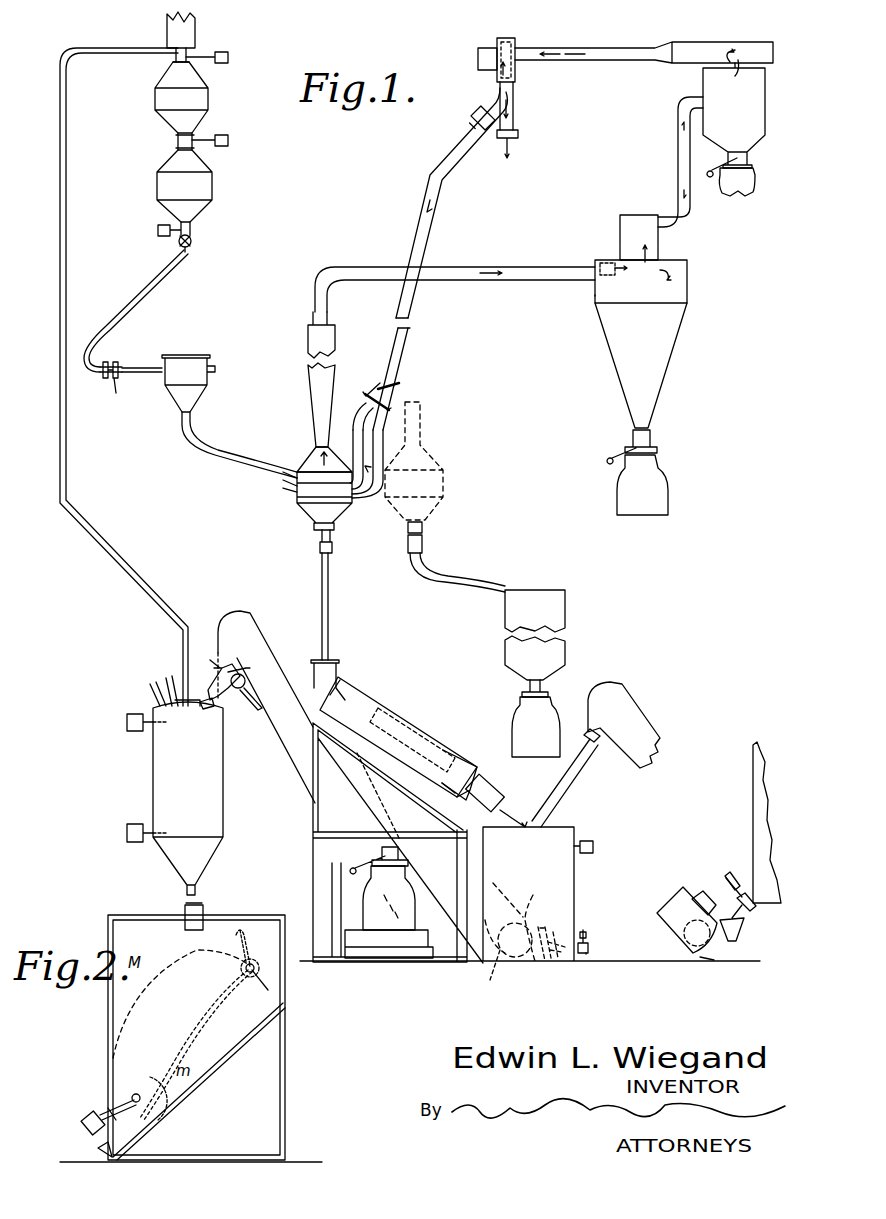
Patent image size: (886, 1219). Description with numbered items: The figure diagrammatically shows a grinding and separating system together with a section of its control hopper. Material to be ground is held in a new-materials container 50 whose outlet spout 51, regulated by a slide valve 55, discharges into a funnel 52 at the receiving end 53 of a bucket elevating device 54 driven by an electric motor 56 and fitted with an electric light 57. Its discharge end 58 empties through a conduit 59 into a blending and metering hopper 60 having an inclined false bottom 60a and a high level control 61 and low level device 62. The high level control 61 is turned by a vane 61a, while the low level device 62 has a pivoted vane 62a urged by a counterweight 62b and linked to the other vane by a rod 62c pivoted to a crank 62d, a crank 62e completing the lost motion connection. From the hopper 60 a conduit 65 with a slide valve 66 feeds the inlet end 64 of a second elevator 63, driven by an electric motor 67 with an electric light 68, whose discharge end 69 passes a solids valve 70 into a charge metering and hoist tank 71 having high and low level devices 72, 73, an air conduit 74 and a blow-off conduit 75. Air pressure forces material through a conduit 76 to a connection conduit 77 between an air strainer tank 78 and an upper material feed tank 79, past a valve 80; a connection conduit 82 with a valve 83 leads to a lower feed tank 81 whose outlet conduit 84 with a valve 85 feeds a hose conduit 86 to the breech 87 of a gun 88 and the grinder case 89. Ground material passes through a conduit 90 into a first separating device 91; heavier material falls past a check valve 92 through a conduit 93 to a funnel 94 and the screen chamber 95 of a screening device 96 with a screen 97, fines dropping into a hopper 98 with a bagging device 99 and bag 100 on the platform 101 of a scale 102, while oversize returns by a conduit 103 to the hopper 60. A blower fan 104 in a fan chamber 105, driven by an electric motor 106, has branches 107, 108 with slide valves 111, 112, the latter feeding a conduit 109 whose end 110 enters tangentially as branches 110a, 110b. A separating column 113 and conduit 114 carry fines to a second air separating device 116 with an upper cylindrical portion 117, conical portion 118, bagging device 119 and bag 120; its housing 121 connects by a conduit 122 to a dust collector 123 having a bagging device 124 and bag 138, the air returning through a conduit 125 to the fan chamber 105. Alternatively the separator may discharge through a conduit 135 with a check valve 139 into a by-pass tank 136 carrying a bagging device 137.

In FIG. 1, the new-materials container 50 is at (753, 798).
In FIG. 1, the outlet spout 51 is at (745, 890).
In FIG. 1, the funnel 52 is at (740, 930).
In FIG. 1, the receiving end 53 is at (708, 958).
In FIG. 1, the elevating device 54 is at (660, 925).
In FIG. 1, the slide valve 55 is at (735, 896).
In FIG. 1, the electric motor 56 is at (687, 945).
In FIG. 1, the electric light 57 is at (700, 896).
In FIG. 1, the discharge end 58 is at (622, 700).
In FIG. 1, the conduit 59 is at (568, 788).
In FIG. 2, the conduit 59 is at (185, 905).
In FIG. 1, the blending and metering hopper 60 is at (560, 895).
In FIG. 2, the blending and metering hopper 60 is at (285, 1056).
In FIG. 2, the inclined false bottom 60a is at (205, 1068).
In FIG. 1, the high level control 61 is at (596, 846).
In FIG. 2, the high level control 61 is at (267, 964).
In FIG. 2, the vane 61a is at (262, 988).
In FIG. 1, the low level device 62 is at (584, 930).
In FIG. 2, the low level device 62 is at (103, 1112).
In FIG. 2, the pivoted vane 62a is at (136, 1094).
In FIG. 1, the counterweight 62b is at (586, 953).
In FIG. 2, the counterweight 62b is at (87, 1123).
In FIG. 2, the rod 62c is at (178, 1040).
In FIG. 2, the crank 62d is at (159, 1124).
In FIG. 2, the finger 62e is at (252, 962).
In FIG. 1, the second elevator 63 is at (478, 898).
In FIG. 1, the inlet end 64 is at (516, 962).
In FIG. 1, the conduit 65 is at (560, 962).
In FIG. 1, the slide valve 66 is at (546, 966).
In FIG. 1, the electric motor 67 is at (498, 964).
In FIG. 1, the electric light 68 is at (531, 917).
In FIG. 1, the discharge end 69 is at (240, 624).
In FIG. 1, the solids valve 70 is at (232, 709).
In FIG. 1, the charge metering and hoist tank 71 is at (153, 777).
In FIG. 1, the high level device 72 is at (122, 728).
In FIG. 1, the low level device 73 is at (126, 834).
In FIG. 1, the conduit 74 is at (148, 686).
In FIG. 1, the blow-off conduit 75 is at (168, 676).
In FIG. 1, the conduit 76 is at (128, 573).
In FIG. 1, the connection conduit 77 is at (188, 55).
In FIG. 1, the air strainer tank 78 is at (167, 34).
In FIG. 1, the upper material feed tank 79 is at (208, 98).
In FIG. 1, the valve 80 is at (212, 60).
In FIG. 1, the lower feed tank 81 is at (212, 186).
In FIG. 1, the connection conduit 82 is at (178, 142).
In FIG. 1, the valve 83 is at (212, 136).
In FIG. 1, the outlet conduit 84 is at (190, 230).
In FIG. 1, the valve 85 is at (191, 242).
In FIG. 1, the hose conduit 86 is at (135, 297).
In FIG. 1, the breech 87 is at (112, 364).
In FIG. 1, the gun 88 is at (143, 368).
In FIG. 1, the grinder case 89 is at (185, 394).
In FIG. 1, the conduit 90 is at (235, 446).
In FIG. 1, the first separating device 91 is at (301, 456).
In FIG. 1, the check valve 92 is at (320, 548).
In FIG. 1, the conduit 93 is at (328, 582).
In FIG. 1, the funnel 94 is at (333, 670).
In FIG. 1, the screen chamber 95 is at (415, 735).
In FIG. 1, the screening device 96 is at (450, 742).
In FIG. 1, the screen 97 is at (393, 722).
In FIG. 1, the hopper 98 is at (373, 795).
In FIG. 1, the bagging device 99 is at (378, 860).
In FIG. 1, the bag 100 is at (400, 912).
In FIG. 1, the platform 101 is at (368, 942).
In FIG. 1, the scale 102 is at (327, 900).
In FIG. 1, the conduit 103 is at (497, 797).
In FIG. 2, the conduit 103 is at (198, 908).
In FIG. 1, the blower fan 104 is at (492, 46).
In FIG. 1, the fan chamber 105 is at (516, 46).
In FIG. 1, the electric motor 106 is at (478, 60).
In FIG. 1, the branch 107 is at (514, 104).
In FIG. 1, the branch 108 is at (490, 108).
In FIG. 1, the conduit 109 is at (425, 198).
In FIG. 1, the end of conduit 110 is at (342, 510).
In FIG. 1, the tangential branch 110a is at (288, 486).
In FIG. 1, the tangential branch 110b is at (357, 437).
In FIG. 1, the slide valve 111 is at (518, 135).
In FIG. 1, the slide valve 112 is at (475, 116).
In FIG. 1, the separating column 113 is at (308, 383).
In FIG. 1, the conduit 114 is at (488, 264).
In FIG. 1, the second air separating device 116 is at (595, 295).
In FIG. 1, the upper cylindrical portion 117 is at (687, 268).
In FIG. 1, the conical portion 118 is at (668, 353).
In FIG. 1, the bagging device 119 is at (650, 440).
In FIG. 1, the bag 120 is at (668, 478).
In FIG. 1, the housing 121 is at (620, 236).
In FIG. 1, the conduit 122 is at (678, 172).
In FIG. 1, the dust collector 123 is at (703, 88).
In FIG. 1, the bagging device 124 is at (753, 158).
In FIG. 1, the conduit 125 is at (612, 62).
In FIG. 1, the conduit 135 is at (452, 576).
In FIG. 1, the by-pass tank 136 is at (555, 608).
In FIG. 1, the bagging device 137 is at (528, 685).
In FIG. 1, the bag 138 is at (545, 710).
In FIG. 1, the check valve 139 is at (422, 545).